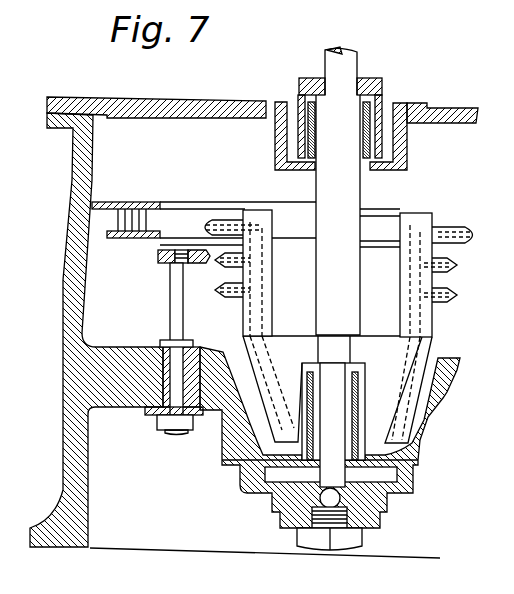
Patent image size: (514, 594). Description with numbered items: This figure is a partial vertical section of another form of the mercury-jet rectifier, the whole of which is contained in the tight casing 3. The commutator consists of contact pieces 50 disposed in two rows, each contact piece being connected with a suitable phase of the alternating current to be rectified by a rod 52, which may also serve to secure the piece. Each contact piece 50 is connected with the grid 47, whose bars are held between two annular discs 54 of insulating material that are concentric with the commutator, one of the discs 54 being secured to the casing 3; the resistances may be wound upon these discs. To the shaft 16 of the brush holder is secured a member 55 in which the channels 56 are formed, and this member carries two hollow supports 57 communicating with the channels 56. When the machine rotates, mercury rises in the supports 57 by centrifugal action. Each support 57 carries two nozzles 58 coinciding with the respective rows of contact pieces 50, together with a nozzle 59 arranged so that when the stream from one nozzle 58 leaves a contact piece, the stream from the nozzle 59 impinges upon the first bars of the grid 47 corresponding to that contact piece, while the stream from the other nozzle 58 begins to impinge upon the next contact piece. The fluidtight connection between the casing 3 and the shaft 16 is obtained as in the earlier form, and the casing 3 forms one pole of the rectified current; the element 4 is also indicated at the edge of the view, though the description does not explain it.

The casing 3 is at (62, 310).
The casing part 4 is at (508, 384).
The shaft 16 is at (316, 197).
The grid 47 is at (149, 222).
The contact piece 50 is at (160, 257).
The rod 52 is at (175, 310).
The annular discs 54 is at (133, 203).
The member 55 is at (287, 343).
The channels 56 is at (396, 355).
The hollow supports 57 is at (243, 321).
The nozzles 58 is at (227, 292).
The nozzle 59 is at (226, 220).